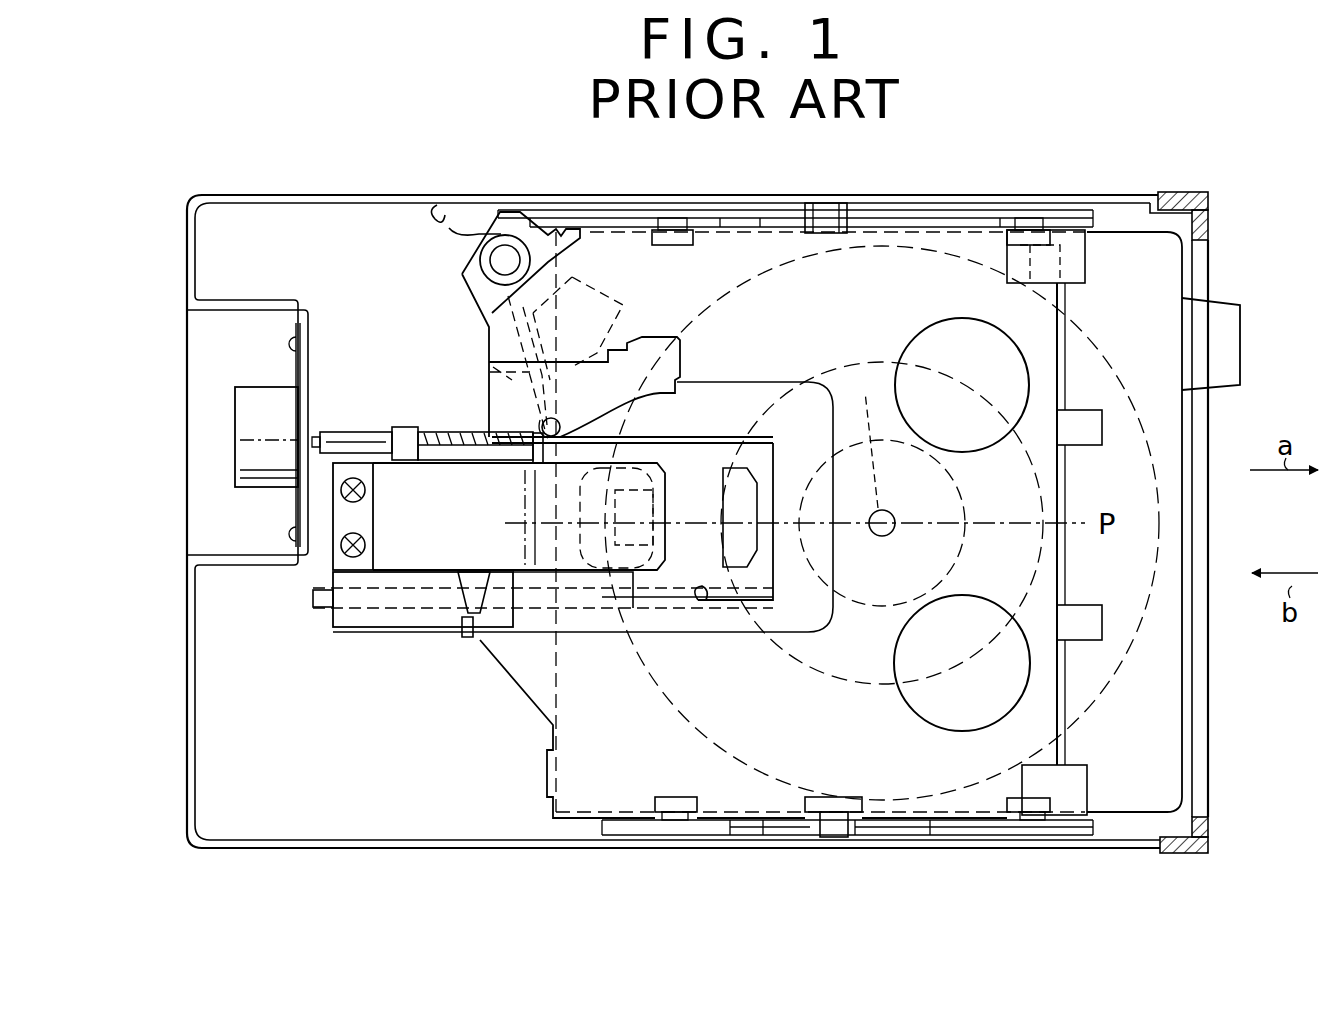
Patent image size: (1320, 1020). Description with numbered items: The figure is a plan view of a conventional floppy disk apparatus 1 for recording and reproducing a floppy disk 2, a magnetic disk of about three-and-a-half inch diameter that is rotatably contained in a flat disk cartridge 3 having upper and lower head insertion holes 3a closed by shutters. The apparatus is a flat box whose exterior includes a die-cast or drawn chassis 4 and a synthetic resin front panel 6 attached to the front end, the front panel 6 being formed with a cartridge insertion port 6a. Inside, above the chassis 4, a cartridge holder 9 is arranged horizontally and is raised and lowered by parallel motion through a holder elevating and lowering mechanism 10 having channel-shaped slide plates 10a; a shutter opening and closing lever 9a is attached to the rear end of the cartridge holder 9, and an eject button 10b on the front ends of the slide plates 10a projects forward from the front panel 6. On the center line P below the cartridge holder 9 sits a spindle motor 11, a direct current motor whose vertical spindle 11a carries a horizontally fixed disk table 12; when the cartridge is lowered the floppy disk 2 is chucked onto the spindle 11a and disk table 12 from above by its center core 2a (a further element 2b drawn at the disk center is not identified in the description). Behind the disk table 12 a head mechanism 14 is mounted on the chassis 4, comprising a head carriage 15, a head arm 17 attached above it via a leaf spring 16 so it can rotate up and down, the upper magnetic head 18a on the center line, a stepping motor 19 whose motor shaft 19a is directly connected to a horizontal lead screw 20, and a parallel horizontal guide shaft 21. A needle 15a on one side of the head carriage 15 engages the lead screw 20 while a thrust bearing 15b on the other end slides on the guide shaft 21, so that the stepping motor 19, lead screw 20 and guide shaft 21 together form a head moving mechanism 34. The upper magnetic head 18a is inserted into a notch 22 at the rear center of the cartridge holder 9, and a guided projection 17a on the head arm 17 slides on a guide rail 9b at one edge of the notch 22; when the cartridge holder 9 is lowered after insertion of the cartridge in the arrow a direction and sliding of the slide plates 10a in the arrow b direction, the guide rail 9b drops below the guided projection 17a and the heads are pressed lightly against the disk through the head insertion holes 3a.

The floppy disk apparatus 1 is at (1218, 192).
The floppy disk 2 is at (1148, 600).
The center core 2a is at (863, 600).
The platen roller shaft 2b is at (888, 533).
The disk cartridge 3 is at (1160, 418).
The head insertion holes 3a is at (712, 430).
The chassis 4 is at (475, 824).
The front panel 6 is at (1210, 214).
The cartridge insertion port 6a is at (1204, 236).
The cartridge holder 9 is at (1040, 722).
The shutter opening and closing lever 9a is at (552, 418).
The guide rail 9b is at (578, 622).
The holder elevating and lowering mechanism 10 is at (907, 214).
The slide plates 10a is at (703, 214).
The eject button 10b is at (1238, 349).
The spindle motor 11 is at (880, 690).
The vertical spindle 11a is at (870, 448).
The disk table 12 is at (882, 527).
The head mechanism 14 is at (418, 644).
The head carriage 15 is at (350, 483).
The needle 15a is at (402, 430).
The thrust bearing 15b is at (378, 630).
The leaf spring 16 is at (345, 512).
The head arm 17 is at (382, 549).
The guided projection 17a is at (474, 640).
The upper magnetic head 18a is at (707, 476).
The stepping motor 19 is at (235, 410).
The motor shaft 19a is at (315, 426).
The lead screw 20 is at (436, 432).
The guide shaft 21 is at (360, 612).
The notch 22 is at (700, 600).
The head moving mechanism 34 is at (378, 417).